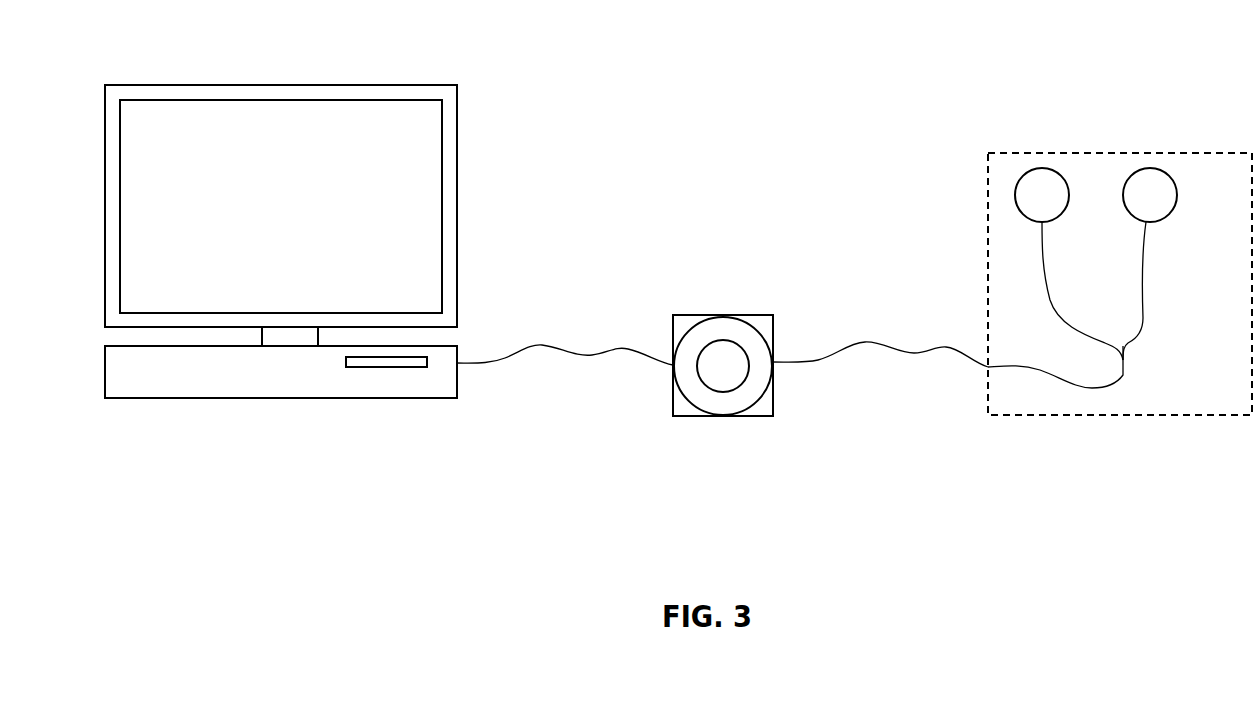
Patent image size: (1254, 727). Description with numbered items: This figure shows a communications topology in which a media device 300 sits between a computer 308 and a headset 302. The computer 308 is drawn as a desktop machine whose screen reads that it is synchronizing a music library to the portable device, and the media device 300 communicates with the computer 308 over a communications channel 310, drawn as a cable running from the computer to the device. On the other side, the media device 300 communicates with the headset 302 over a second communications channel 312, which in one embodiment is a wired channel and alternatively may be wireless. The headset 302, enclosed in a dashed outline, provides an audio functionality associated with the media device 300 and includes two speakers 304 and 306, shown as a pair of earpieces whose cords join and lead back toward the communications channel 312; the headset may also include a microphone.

The media device 300 is at (716, 316).
The headset 302 is at (1120, 261).
The speaker 304 is at (1066, 186).
The speaker 306 is at (1176, 186).
The computer 308 is at (114, 88).
The communications channel 310 is at (541, 345).
The communications channel 312 is at (867, 343).